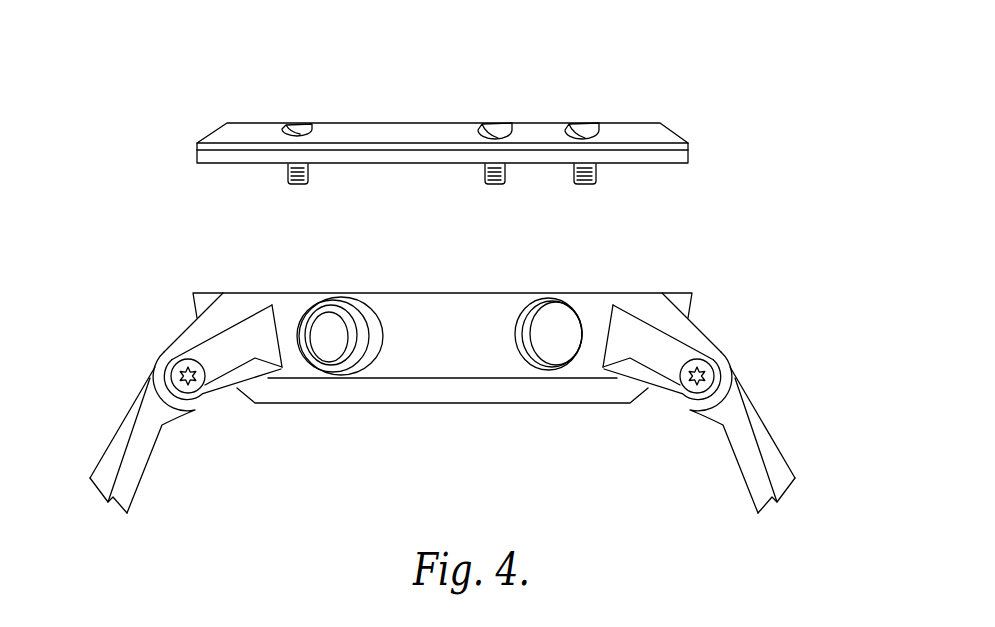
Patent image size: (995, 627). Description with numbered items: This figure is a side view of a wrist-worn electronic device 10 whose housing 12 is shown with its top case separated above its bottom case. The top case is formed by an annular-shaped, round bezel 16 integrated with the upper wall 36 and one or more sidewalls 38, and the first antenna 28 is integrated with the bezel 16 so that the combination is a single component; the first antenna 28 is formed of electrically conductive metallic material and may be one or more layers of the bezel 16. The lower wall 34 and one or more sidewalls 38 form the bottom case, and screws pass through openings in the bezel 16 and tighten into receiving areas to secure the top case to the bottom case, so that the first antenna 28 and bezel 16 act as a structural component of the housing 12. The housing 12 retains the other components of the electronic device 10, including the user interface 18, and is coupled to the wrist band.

The wrist-worn electronic device 10 is at (466, 52).
The housing 12 is at (102, 77).
The bezel 16 is at (521, 113).
The first antenna 28 is at (521, 113).
The upper wall 36 is at (622, 98).
The sidewall 38 is at (458, 307).
The user interface 18 is at (583, 292).
The lower wall 34 is at (512, 402).